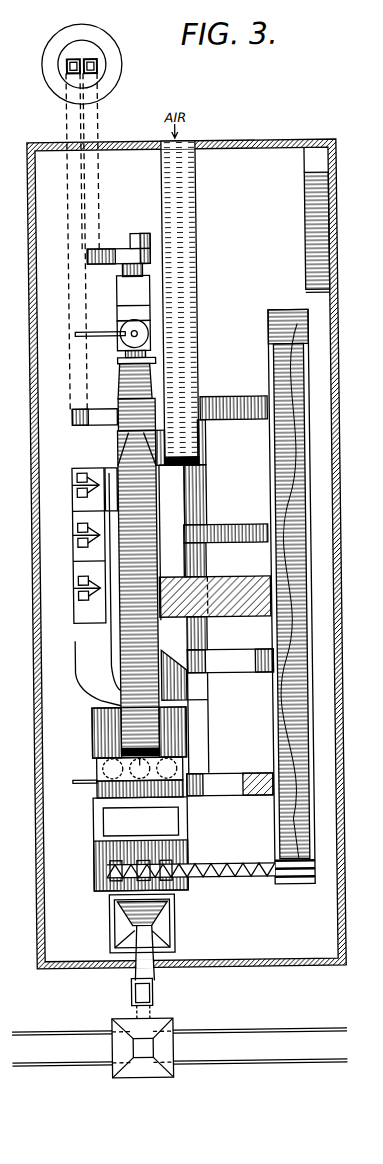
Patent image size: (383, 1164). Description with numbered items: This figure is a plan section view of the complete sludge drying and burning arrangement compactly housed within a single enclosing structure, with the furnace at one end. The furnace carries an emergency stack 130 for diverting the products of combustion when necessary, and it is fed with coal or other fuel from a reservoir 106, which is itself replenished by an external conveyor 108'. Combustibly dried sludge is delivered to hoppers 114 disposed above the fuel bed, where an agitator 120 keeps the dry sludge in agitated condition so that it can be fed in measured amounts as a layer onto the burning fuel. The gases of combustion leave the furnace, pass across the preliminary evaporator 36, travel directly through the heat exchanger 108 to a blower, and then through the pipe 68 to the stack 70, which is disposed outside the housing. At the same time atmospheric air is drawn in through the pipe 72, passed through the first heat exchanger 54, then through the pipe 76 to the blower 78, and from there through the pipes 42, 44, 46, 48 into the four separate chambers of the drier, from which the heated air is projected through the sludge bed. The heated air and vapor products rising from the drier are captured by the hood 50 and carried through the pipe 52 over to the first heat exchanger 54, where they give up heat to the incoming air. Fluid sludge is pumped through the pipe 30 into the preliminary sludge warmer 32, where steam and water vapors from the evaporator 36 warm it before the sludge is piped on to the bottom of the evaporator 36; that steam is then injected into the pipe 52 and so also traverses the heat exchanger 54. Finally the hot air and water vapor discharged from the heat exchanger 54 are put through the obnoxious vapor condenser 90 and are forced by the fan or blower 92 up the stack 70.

The pipe 30 is at (69, 786).
The preliminary sludge warmer 32 is at (178, 761).
The preliminary evaporator 36 is at (121, 782).
The pipe 42 is at (234, 412).
The pipe 44 is at (236, 528).
The pipe 46 is at (234, 658).
The pipe 48 is at (236, 776).
The hood 50 is at (300, 548).
The pipe 52 is at (234, 582).
The first heat exchanger 54 is at (120, 439).
The pipe 68 is at (81, 123).
The stack 70 is at (107, 43).
The pipe 72 is at (203, 230).
The pipe 76 is at (90, 683).
The blower 78 is at (76, 530).
The obnoxious vapor condenser 90 is at (156, 332).
The fan or blower 92 is at (128, 248).
The reservoir 106 is at (175, 917).
The heat exchanger 108 is at (203, 520).
The external conveyor 108' is at (172, 998).
The hoppers 114 is at (135, 862).
The agitator 120 is at (128, 330).
The emergency stack 130 is at (184, 820).